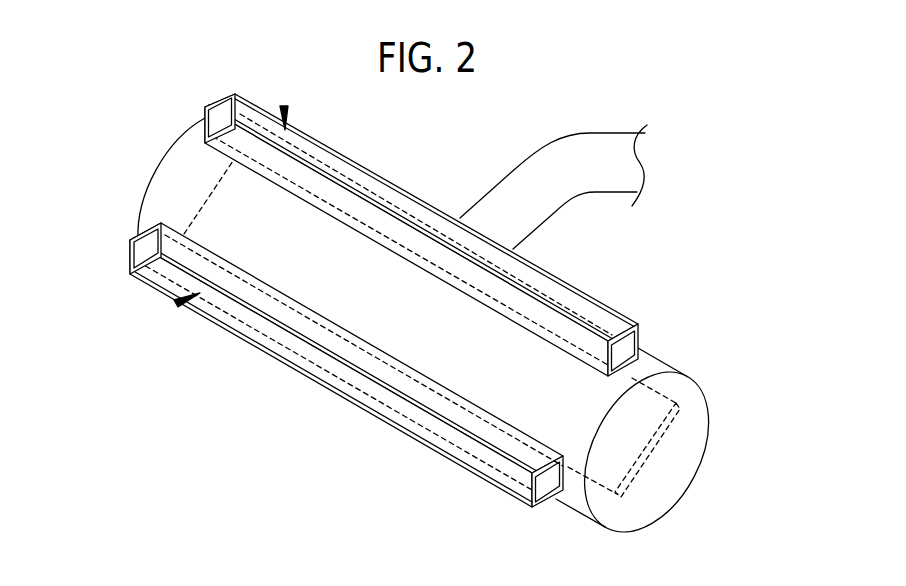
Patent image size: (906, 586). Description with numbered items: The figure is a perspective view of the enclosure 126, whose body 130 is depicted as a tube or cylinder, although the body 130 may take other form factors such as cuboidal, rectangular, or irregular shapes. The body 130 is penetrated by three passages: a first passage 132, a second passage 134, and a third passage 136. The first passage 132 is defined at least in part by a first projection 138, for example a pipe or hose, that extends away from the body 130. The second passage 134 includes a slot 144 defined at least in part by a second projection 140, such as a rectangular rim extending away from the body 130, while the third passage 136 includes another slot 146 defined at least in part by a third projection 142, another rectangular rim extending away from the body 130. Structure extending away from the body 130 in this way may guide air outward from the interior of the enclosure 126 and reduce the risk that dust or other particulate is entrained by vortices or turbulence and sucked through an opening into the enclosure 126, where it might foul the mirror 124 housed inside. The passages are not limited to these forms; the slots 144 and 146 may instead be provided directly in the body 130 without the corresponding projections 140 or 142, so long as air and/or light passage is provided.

The mirror 124 is at (663, 437).
The enclosure 126 is at (660, 512).
The body 130 is at (700, 386).
The first passage 132 is at (613, 132).
The second passage 134 is at (325, 170).
The third passage 136 is at (280, 345).
The first projection 138 is at (505, 177).
The second projection 140 is at (205, 107).
The third projection 142 is at (130, 258).
The slot 144 is at (284, 108).
The slot 146 is at (176, 303).